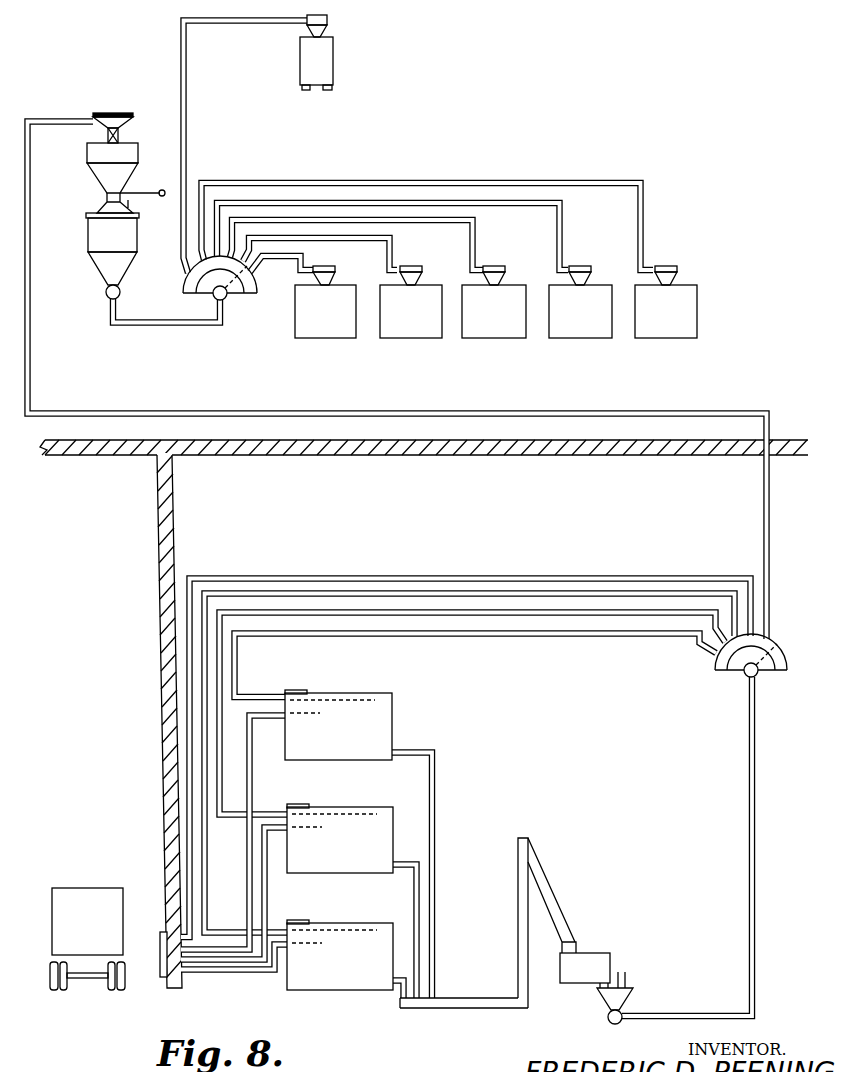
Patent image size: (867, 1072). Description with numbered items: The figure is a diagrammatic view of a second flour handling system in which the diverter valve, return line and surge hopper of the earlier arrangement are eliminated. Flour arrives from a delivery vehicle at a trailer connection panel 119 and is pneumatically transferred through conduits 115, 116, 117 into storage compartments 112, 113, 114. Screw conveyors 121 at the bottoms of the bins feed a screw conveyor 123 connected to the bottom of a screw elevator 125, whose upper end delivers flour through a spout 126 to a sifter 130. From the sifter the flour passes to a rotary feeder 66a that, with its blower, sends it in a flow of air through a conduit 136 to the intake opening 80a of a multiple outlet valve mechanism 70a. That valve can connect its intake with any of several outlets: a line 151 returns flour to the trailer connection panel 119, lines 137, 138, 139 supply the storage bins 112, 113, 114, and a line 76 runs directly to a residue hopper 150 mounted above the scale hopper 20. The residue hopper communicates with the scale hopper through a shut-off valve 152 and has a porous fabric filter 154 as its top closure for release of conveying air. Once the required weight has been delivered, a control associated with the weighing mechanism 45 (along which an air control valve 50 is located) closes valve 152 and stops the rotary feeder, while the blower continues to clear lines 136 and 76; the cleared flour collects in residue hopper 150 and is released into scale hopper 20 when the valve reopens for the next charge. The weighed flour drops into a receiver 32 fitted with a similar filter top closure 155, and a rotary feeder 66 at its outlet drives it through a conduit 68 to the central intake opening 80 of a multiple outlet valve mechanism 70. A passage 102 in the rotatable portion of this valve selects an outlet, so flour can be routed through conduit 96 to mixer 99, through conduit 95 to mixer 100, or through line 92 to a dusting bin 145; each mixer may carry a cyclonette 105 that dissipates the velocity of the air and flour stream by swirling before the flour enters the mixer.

The scale hopper 20 is at (113, 176).
The receiver 32 is at (108, 272).
The air line 45 is at (140, 193).
The air control valve 50 is at (163, 197).
The rotary feeder 66 is at (108, 300).
The rotary feeder 66a is at (612, 1022).
The conduit 68 is at (190, 326).
The multiple outlet valve mechanism 70 is at (186, 284).
The multiple outlet valve mechanism 70a is at (716, 662).
The line 76 is at (32, 290).
The central intake opening 80 is at (214, 298).
The intake opening 80a is at (745, 678).
The conduit 92 is at (186, 112).
The conduit 95 is at (336, 241).
The conduit 96 is at (266, 264).
The mixer 99 is at (326, 338).
The mixer 100 is at (408, 338).
The passage 102 is at (228, 302).
The cyclonette 105 is at (432, 259).
The storage compartment 112 is at (352, 747).
The storage compartment 113 is at (353, 859).
The storage compartment 114 is at (355, 977).
The conduit 115 is at (252, 765).
The conduit 116 is at (266, 881).
The conduit 117 is at (225, 973).
The trailer connection panel 119 is at (160, 957).
The screw conveyor 121 is at (436, 815).
The screw conveyor 123 is at (460, 997).
The screw elevator 125 is at (518, 880).
The spout 126 is at (552, 903).
The sifter 130 is at (603, 962).
The conduit 136 is at (750, 930).
The line 137 is at (540, 590).
The line 138 is at (460, 616).
The line 139 is at (548, 637).
The dusting bin 145 is at (318, 55).
The residue hopper 150 is at (113, 870).
The line 151 is at (447, 577).
The shut-off valve 152 is at (119, 134).
The filter 154 is at (100, 113).
The filter top closure 155 is at (100, 205).